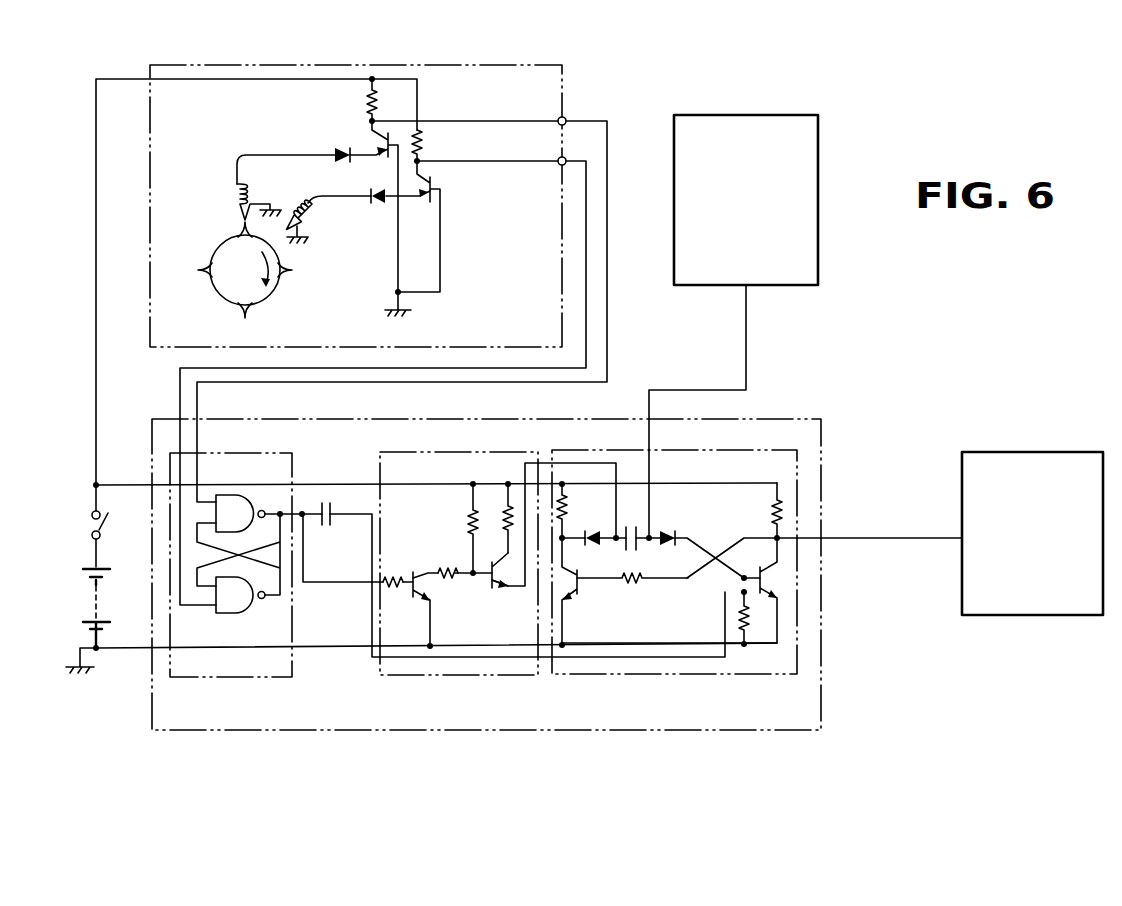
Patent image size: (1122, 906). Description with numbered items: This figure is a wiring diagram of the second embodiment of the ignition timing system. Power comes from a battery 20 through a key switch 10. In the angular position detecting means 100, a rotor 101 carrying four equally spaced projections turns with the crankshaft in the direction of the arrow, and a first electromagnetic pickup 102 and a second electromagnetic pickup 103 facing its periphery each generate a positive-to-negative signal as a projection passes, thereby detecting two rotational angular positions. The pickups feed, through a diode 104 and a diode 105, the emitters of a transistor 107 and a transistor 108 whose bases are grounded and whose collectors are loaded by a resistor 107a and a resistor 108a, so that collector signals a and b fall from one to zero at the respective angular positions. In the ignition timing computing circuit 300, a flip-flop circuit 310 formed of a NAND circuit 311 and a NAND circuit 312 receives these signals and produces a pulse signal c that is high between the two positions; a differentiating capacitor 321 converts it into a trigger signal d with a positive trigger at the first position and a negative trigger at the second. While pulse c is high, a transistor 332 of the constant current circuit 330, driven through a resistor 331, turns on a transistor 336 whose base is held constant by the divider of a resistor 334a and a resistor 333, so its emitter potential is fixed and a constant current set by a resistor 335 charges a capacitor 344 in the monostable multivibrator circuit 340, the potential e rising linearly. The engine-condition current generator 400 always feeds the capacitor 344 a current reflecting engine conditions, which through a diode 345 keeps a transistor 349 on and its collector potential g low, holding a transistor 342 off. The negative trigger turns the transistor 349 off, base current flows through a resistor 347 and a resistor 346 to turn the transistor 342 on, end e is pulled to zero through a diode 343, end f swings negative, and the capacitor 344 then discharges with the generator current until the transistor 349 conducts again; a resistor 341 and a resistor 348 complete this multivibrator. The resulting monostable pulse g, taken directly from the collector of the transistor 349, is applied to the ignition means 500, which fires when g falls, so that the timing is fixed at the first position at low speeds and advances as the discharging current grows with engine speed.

The key switch 10 is at (92, 523).
The battery 20 is at (92, 597).
The angular position detecting means 100 is at (427, 65).
The rotor 101 is at (262, 295).
The first electromagnetic pickup 102 is at (236, 193).
The second electromagnetic pickup 103 is at (312, 207).
The diode 104 is at (340, 163).
The diode 105 is at (378, 205).
The transistor 107 is at (384, 141).
The resistor 107a is at (368, 100).
The transistor 108 is at (445, 186).
The resistor 108a is at (424, 142).
The ignition timing computing circuit 300 is at (490, 730).
The flip-flop circuit 310 is at (217, 677).
The NAND circuit 311 is at (227, 494).
The NAND circuit 312 is at (232, 614).
The differentiating capacitor 321 is at (326, 527).
The constant current circuit 330 is at (493, 675).
The resistor 331 is at (400, 580).
The transistor 332 is at (425, 600).
The resistor 333 is at (446, 577).
The resistor 334a is at (468, 528).
The resistor 335 is at (505, 510).
The transistor 336 is at (498, 588).
The monostable multivibrator circuit 340 is at (673, 675).
The resistor 341 is at (590, 516).
The transistor 342 is at (565, 598).
The diode 343 is at (590, 543).
The capacitor 344 is at (632, 550).
The diode 345 is at (668, 530).
The resistor 346 is at (636, 585).
The resistor 347 is at (775, 508).
The resistor 348 is at (750, 622).
The transistor 349 is at (795, 585).
The engine-condition current generator 400 is at (747, 115).
The ignition means 500 is at (1033, 452).
The collector signal of transistor 107 a is at (566, 117).
The collector signal of transistor 108 b is at (566, 157).
The pulse signal c is at (300, 511).
The trigger signal d is at (357, 511).
The capacitor end potential e is at (618, 534).
The capacitor end potential f is at (650, 534).
The output pulse signal g is at (893, 535).